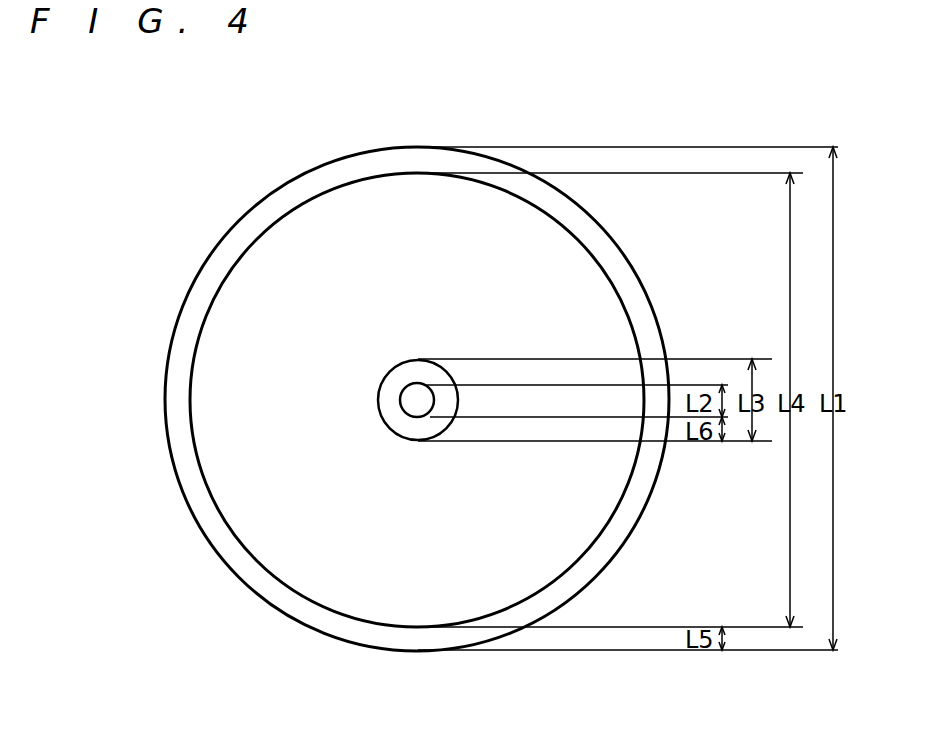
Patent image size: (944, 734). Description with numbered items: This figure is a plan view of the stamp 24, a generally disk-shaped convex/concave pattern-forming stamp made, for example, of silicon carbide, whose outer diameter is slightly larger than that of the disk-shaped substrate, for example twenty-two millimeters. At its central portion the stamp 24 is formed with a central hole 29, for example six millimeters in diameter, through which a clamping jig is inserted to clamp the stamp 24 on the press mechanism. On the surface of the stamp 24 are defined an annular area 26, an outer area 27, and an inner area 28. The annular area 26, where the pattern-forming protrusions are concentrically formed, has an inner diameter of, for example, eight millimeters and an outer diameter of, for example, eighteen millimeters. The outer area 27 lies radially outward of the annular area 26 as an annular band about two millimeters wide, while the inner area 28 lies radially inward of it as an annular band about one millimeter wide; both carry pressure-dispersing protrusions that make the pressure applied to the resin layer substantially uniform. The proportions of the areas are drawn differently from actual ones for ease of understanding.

The stamp 24 is at (441, 117).
The annular area 26 is at (587, 293).
The outer area 27 is at (645, 327).
The inner area 28 is at (388, 397).
The central hole 29 is at (413, 398).